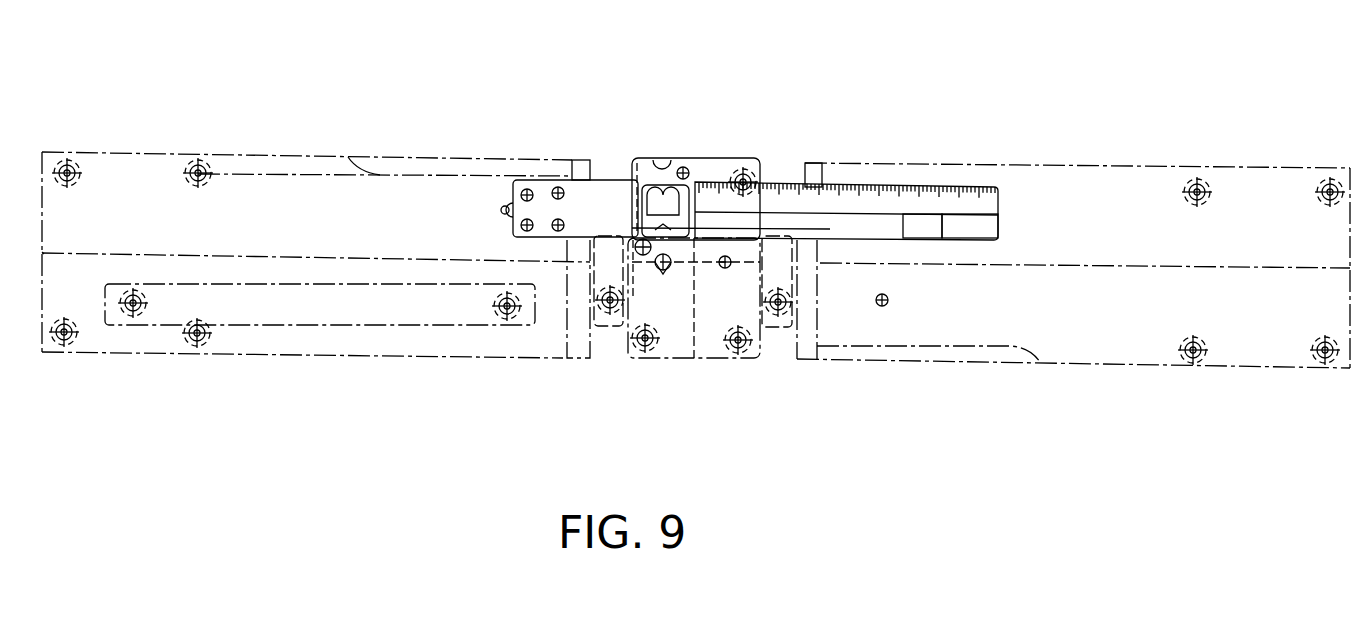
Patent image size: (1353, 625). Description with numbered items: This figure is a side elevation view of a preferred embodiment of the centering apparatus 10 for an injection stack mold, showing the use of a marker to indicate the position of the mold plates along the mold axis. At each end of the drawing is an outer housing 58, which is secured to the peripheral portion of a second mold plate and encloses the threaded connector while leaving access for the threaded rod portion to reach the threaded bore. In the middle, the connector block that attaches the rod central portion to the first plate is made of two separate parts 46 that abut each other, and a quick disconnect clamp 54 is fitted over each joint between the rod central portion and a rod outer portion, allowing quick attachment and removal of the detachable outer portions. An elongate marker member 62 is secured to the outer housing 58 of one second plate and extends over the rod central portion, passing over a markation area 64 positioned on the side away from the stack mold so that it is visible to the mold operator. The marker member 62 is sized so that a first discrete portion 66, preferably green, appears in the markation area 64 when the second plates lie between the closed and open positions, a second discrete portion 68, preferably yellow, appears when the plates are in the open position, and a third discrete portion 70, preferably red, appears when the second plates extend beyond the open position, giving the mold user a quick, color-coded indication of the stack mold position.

The centering apparatus 10 is at (95, 118).
The outer housing 58 is at (470, 197).
The elongate marker member 62 is at (600, 197).
The markation area 64 is at (692, 200).
The first discrete portion 66 is at (788, 220).
The second discrete portion 68 is at (923, 228).
The third discrete portion 70 is at (978, 220).
The separable parts 46 is at (715, 352).
The quick disconnect clamp 54 is at (610, 327).